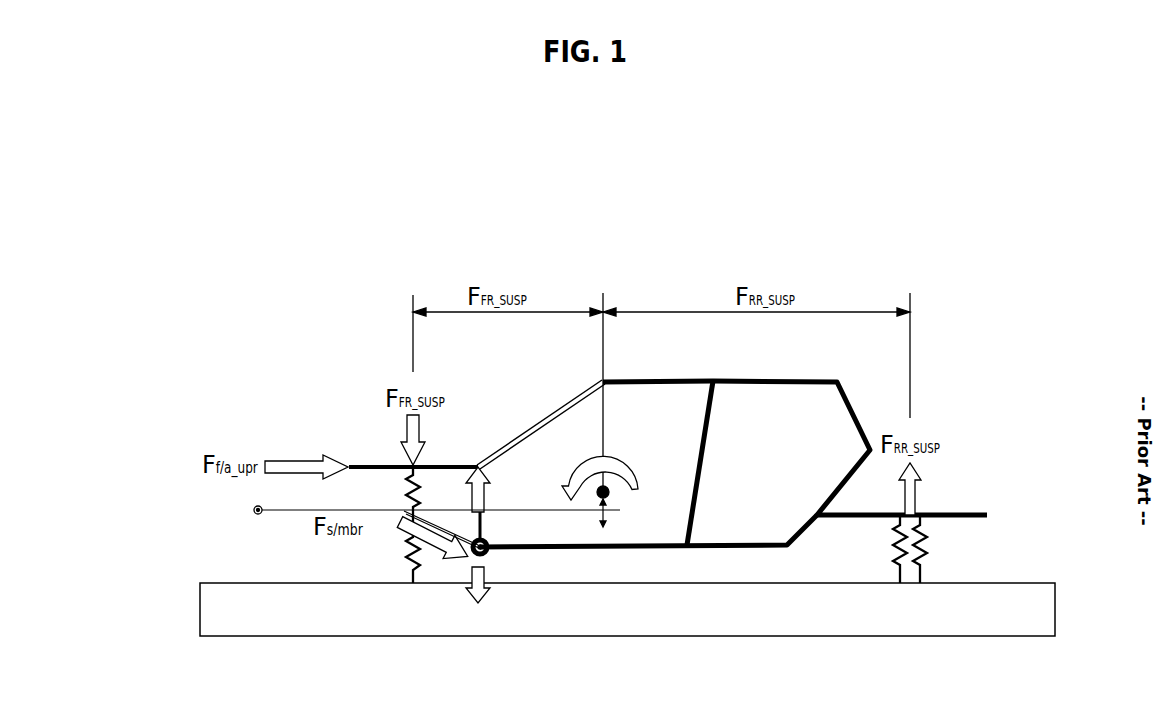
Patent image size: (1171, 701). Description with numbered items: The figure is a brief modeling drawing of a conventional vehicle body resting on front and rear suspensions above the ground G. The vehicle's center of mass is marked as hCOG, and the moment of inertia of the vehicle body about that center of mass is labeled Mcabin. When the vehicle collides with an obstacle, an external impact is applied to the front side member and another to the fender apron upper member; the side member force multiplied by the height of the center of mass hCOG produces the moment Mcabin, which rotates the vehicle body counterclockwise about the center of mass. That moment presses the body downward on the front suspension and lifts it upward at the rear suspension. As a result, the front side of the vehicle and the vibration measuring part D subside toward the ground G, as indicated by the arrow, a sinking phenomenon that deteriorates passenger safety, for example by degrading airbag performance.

The vibration measuring part D is at (470, 563).
The ground G is at (627, 609).
The moment of inertia of vehicle body Mcabin is at (621, 458).
The center of mass of vehicle hCOG is at (633, 506).